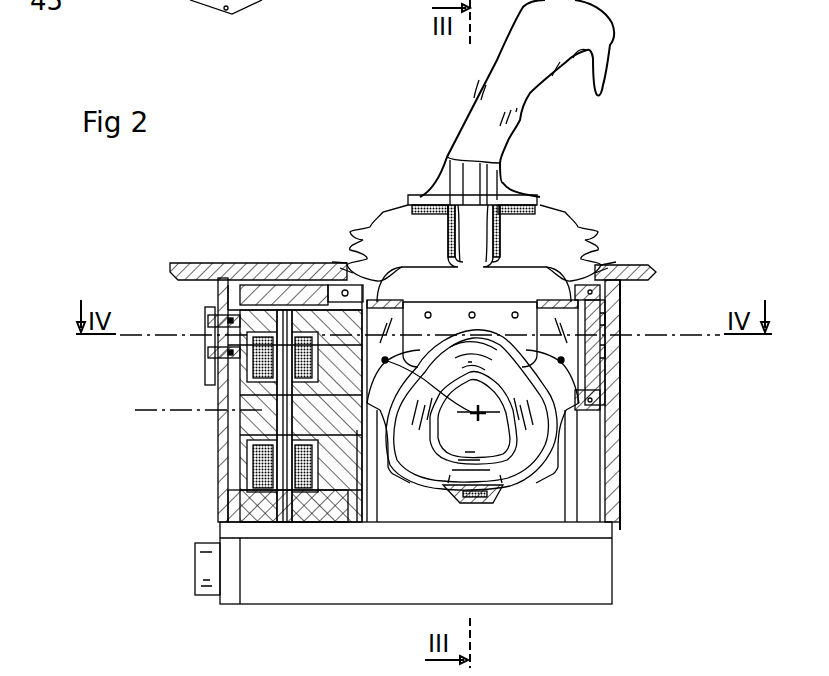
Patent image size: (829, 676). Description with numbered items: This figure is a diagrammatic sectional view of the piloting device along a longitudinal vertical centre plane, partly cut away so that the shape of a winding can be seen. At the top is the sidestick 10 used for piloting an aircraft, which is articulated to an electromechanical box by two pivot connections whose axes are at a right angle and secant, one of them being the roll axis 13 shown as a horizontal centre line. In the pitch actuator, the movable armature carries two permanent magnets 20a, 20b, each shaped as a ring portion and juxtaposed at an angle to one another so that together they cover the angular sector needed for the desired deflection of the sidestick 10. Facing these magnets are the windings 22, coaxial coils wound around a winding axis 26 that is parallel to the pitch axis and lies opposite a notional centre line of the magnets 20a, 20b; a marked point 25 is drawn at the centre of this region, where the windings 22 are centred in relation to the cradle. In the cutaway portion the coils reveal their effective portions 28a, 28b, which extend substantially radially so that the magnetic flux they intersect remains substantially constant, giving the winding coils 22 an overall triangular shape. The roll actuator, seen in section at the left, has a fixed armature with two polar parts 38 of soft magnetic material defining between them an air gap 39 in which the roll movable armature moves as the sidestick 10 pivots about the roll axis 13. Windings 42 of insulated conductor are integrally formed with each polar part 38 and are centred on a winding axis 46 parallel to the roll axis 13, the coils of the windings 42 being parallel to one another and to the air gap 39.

The sidestick 10 is at (600, 28).
The roll axis 13 is at (655, 340).
The permanent magnet 20a is at (358, 430).
The permanent magnet 20b is at (577, 290).
The winding 22 is at (432, 467).
The pivot point 25 is at (478, 413).
The winding axis 26 is at (476, 414).
The effective portion 28a is at (433, 400).
The effective portion 28b is at (523, 407).
The polar part 38 is at (317, 527).
The air gap 39 is at (283, 505).
The winding 42 is at (302, 362).
The winding axis 46 is at (162, 412).